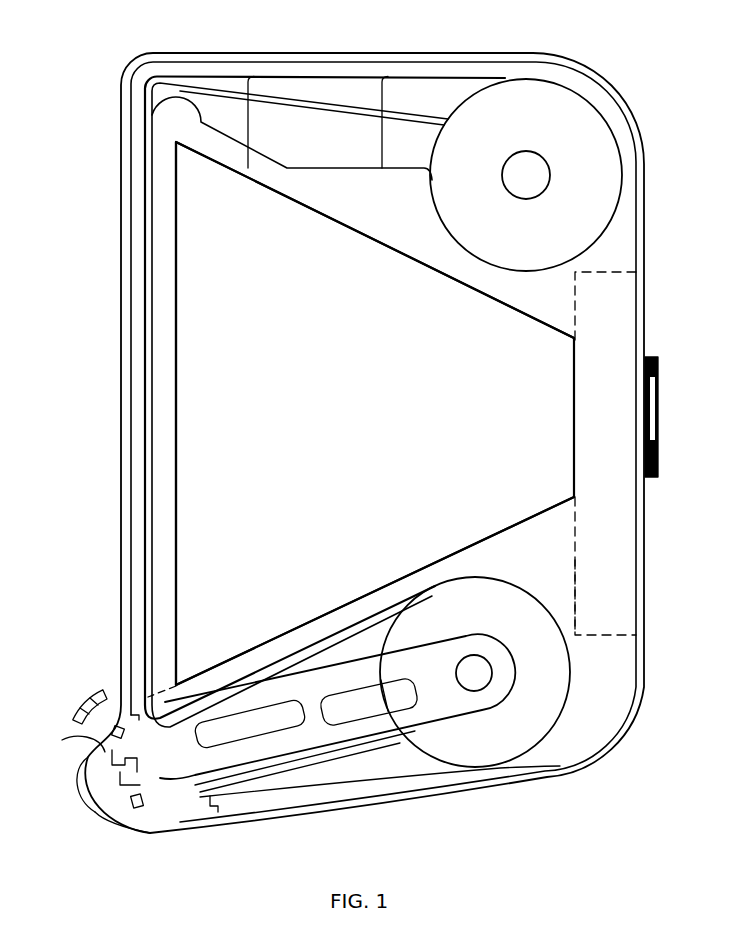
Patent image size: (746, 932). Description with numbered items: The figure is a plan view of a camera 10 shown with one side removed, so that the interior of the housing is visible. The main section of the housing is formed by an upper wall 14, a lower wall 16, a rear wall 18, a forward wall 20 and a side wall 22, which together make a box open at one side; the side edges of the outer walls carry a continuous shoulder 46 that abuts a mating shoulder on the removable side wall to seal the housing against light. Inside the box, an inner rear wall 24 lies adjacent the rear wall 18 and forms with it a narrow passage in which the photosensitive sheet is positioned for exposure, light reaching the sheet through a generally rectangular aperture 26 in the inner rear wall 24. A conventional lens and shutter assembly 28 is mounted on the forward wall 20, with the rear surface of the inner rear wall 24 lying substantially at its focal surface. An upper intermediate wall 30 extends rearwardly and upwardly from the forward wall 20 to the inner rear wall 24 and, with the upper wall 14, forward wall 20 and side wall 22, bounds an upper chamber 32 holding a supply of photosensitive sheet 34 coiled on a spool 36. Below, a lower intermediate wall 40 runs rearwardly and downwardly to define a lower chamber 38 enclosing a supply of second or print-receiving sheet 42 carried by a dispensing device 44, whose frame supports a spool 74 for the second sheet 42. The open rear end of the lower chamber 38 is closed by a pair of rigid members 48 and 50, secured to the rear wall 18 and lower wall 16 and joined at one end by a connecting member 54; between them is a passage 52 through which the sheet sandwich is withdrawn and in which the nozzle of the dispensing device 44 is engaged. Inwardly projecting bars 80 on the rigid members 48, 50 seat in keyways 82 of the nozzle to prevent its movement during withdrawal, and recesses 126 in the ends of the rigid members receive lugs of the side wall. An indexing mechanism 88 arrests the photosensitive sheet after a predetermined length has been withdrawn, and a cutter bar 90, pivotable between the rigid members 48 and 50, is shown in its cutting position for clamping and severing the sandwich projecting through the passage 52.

The camera 10 is at (627, 750).
The upper wall 14 is at (383, 419).
The lower wall 16 is at (380, 802).
The rear wall 18 is at (292, 402).
The forward wall 20 is at (628, 438).
The side wall 22 is at (359, 425).
The inner rear wall 24 is at (198, 413).
The aperture 26 is at (177, 135).
The lens and shutter assembly 28 is at (617, 558).
The upper intermediate wall 30 is at (375, 240).
The upper chamber 32 is at (526, 143).
The photosensitive sheet 34 is at (438, 92).
The spool 36 is at (586, 140).
The lower chamber 38 is at (357, 765).
The lower intermediate wall 40 is at (375, 591).
The second sheet 42 is at (293, 772).
The dispensing device 44 is at (190, 775).
The continuous shoulder 46 is at (364, 424).
The rigid member 48 is at (88, 754).
The rigid member 50 is at (149, 829).
The passage 52 is at (66, 784).
The connecting member 54 is at (92, 776).
The spool 74 is at (492, 743).
The bars 80 is at (68, 707).
The keyways 82 is at (110, 824).
The indexing mechanism 88 is at (312, 92).
The cutter bar 90 is at (93, 705).
The recesses 126 is at (148, 690).